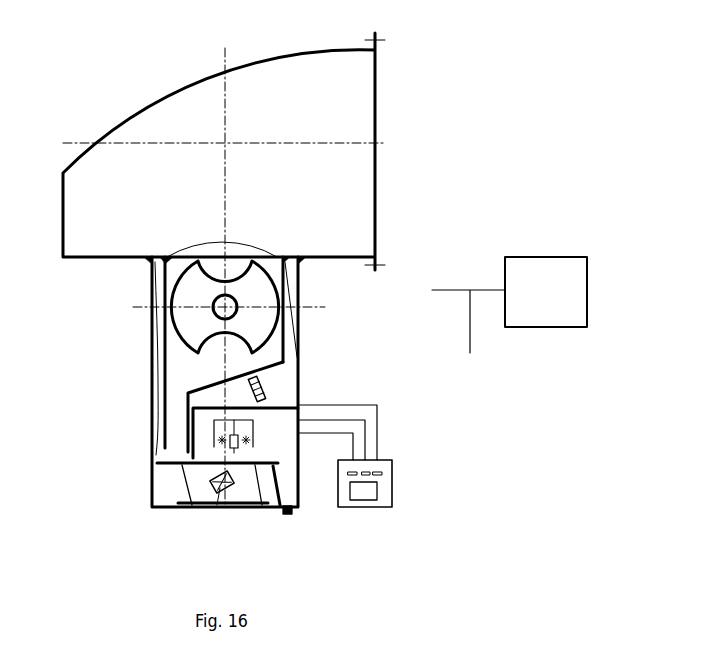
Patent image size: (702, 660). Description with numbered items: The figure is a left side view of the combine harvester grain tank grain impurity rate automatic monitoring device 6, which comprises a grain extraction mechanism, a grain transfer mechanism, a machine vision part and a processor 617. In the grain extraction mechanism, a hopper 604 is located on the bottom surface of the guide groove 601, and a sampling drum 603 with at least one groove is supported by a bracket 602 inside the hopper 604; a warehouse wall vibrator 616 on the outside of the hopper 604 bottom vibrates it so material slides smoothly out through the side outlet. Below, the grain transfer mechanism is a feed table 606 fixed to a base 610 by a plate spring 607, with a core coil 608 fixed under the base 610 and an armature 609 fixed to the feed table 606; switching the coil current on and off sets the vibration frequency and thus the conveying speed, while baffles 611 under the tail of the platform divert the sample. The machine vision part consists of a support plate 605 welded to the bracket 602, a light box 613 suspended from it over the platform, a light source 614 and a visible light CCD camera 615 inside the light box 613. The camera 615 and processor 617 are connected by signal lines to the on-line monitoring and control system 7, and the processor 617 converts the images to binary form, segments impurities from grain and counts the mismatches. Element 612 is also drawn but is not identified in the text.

The grain impurity rate automatic monitoring device 6 is at (417, 490).
The multi-channel adaptive cleaning device operating status on-line monitoring and c 7 is at (509, 319).
The guide groove 601 is at (118, 126).
The bracket 602 is at (150, 262).
The sampling drum 603 is at (172, 330).
The hopper 604 is at (153, 395).
The support plate 605 is at (187, 440).
The feed table 606 is at (178, 466).
The plate spring 607 is at (190, 510).
The core coil 608 is at (220, 478).
The armature 609 is at (230, 466).
The base 610 is at (257, 505).
The baffles 611 is at (277, 512).
The connector 612 is at (288, 514).
The light box 613 is at (248, 438).
The light source 614 is at (240, 432).
The visible light CCD camera 615 is at (254, 430).
The warehouse wall vibrator 616 is at (262, 398).
The processor 617 is at (348, 498).